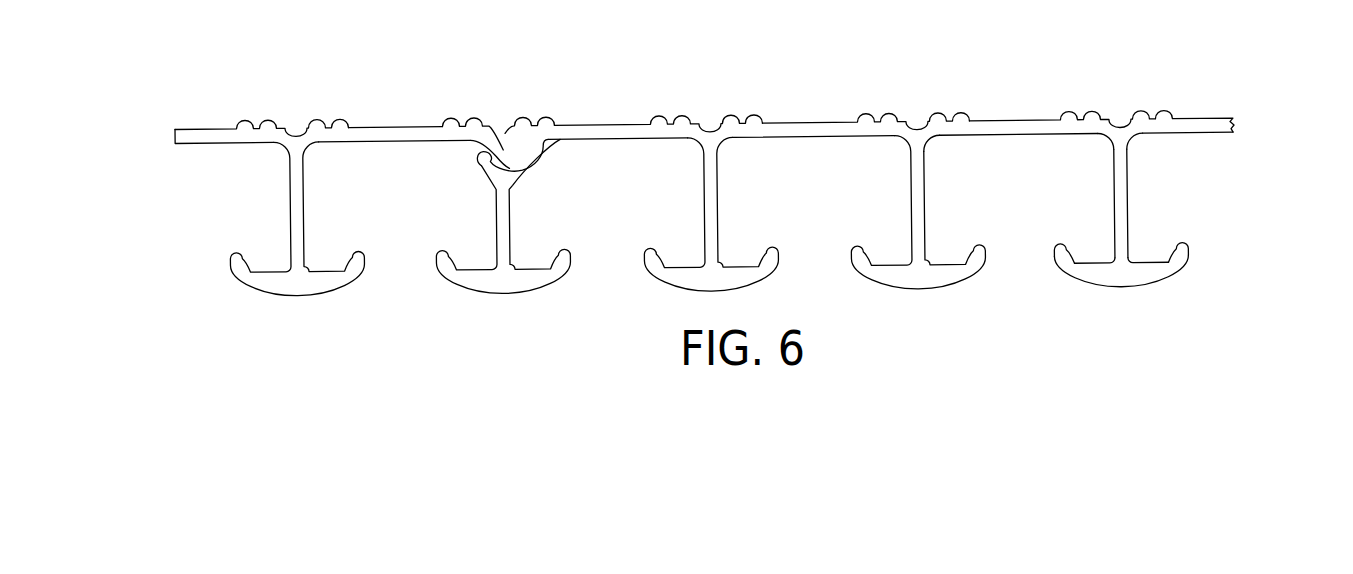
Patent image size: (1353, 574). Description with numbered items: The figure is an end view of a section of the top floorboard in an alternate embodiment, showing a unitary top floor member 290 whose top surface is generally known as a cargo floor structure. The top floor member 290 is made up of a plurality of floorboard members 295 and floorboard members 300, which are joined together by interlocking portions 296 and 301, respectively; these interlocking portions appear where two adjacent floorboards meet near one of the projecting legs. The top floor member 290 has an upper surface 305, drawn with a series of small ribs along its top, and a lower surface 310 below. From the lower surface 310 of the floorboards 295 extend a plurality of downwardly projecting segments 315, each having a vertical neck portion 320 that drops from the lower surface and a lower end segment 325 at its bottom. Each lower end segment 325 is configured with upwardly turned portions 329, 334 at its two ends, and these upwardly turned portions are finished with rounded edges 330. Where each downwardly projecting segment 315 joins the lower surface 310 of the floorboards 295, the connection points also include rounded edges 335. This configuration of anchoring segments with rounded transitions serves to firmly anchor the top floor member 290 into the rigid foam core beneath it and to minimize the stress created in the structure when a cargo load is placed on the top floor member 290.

The unitary top floor member 290 is at (1117, 75).
The floorboard member 295 is at (1198, 110).
The interlocking portion 296 is at (528, 108).
The floorboard member 300 is at (368, 115).
The interlocking portion 301 is at (488, 123).
The upper surface 305 is at (799, 119).
The lower surface 310 is at (816, 138).
The downwardly projecting segment 315 is at (1155, 189).
The vertical neck portion 320 is at (1130, 224).
The lower end segment 325 is at (1150, 279).
The upwardly turned portion 329 is at (1192, 251).
The rounded edge 330 is at (1188, 270).
The upwardly turned portion 334 is at (1078, 241).
The rounded edge 335 is at (934, 149).